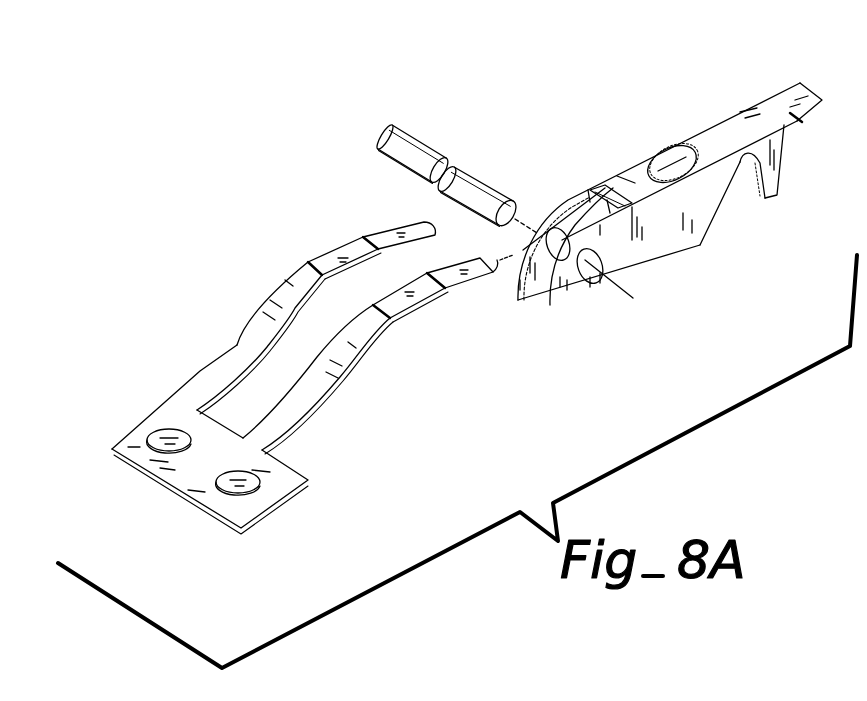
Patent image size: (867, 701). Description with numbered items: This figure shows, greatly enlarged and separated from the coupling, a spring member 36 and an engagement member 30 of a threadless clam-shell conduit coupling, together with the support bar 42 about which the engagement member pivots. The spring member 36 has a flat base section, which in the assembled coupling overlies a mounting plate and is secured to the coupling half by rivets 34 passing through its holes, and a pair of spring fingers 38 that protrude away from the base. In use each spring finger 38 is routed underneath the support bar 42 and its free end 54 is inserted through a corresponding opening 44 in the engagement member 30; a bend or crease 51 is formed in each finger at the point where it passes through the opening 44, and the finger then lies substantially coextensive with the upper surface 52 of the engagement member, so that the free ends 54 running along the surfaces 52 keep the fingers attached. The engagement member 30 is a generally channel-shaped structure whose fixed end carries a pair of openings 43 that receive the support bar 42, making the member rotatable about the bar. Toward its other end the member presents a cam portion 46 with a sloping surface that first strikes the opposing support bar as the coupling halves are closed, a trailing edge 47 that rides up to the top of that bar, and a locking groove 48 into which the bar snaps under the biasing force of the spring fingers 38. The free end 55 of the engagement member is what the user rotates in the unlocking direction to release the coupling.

The engagement member 30 is at (689, 199).
The rivets 34 is at (160, 432).
The spring member 36 is at (268, 376).
The spring fingers 38 is at (237, 353).
The support bar 42 is at (487, 175).
The openings 43 is at (566, 302).
The openings 44 is at (663, 155).
The cam portions 46 is at (787, 159).
The trailing edges 47 is at (760, 168).
The locking grooves 48 is at (745, 166).
The bend or crease 51 is at (353, 243).
The upper surfaces 52 is at (767, 117).
The free ends 54 is at (433, 230).
The free ends 55 is at (813, 88).